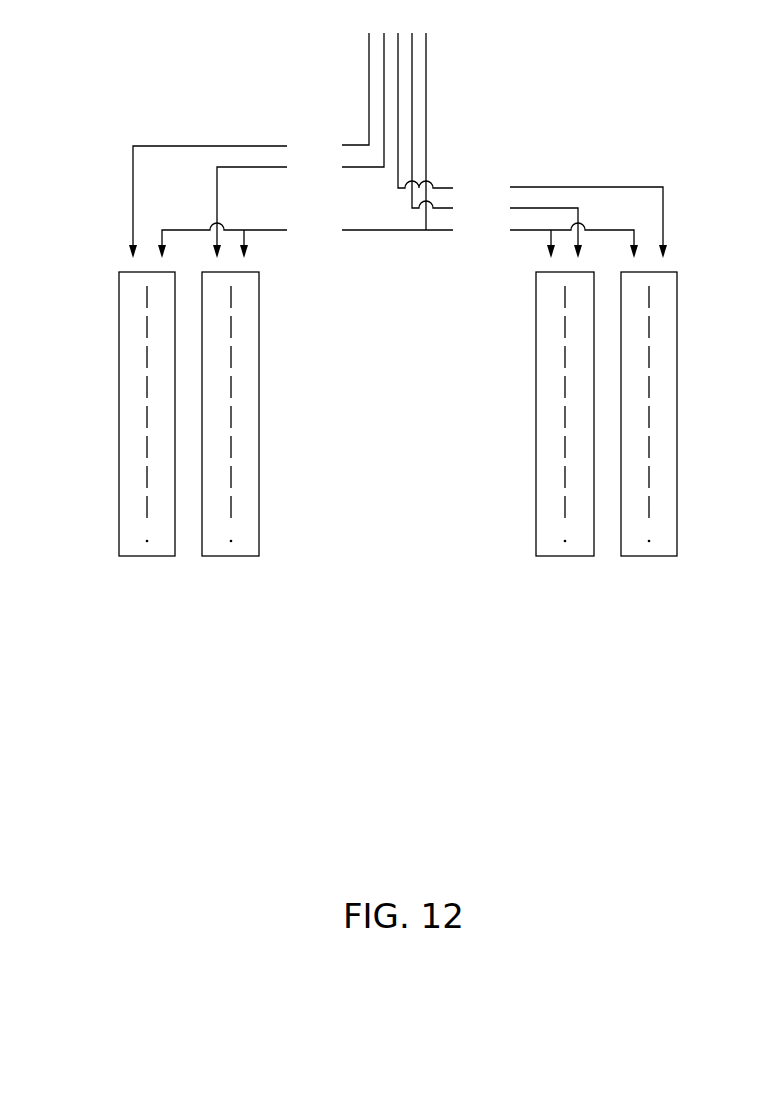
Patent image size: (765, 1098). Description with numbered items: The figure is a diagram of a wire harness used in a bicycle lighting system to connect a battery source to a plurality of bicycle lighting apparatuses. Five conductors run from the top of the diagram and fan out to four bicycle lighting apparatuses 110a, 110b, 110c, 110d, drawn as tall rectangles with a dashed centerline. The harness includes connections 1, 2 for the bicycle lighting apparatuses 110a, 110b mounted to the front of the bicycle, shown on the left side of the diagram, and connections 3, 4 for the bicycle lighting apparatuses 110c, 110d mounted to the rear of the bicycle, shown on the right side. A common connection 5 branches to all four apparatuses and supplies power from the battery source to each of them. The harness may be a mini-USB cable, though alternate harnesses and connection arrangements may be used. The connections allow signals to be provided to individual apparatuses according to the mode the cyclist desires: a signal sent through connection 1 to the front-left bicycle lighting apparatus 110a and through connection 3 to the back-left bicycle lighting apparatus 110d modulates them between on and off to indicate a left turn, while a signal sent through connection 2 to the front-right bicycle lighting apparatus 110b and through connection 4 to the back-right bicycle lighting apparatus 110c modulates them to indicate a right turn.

The connection 1 is at (252, 134).
The connection 2 is at (301, 134).
The connection 3 is at (529, 134).
The connection 4 is at (494, 134).
The common connection 5 is at (398, 134).
The bicycle lighting apparatus 110a is at (141, 542).
The bicycle lighting apparatus 110b is at (233, 551).
The bicycle lighting apparatus 110c is at (568, 543).
The bicycle lighting apparatus 110d is at (649, 543).